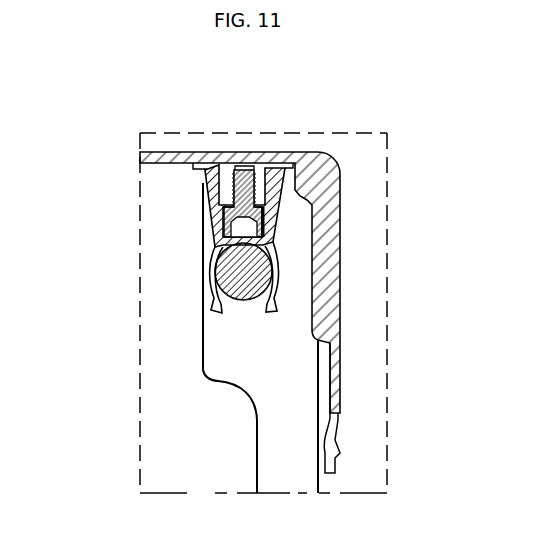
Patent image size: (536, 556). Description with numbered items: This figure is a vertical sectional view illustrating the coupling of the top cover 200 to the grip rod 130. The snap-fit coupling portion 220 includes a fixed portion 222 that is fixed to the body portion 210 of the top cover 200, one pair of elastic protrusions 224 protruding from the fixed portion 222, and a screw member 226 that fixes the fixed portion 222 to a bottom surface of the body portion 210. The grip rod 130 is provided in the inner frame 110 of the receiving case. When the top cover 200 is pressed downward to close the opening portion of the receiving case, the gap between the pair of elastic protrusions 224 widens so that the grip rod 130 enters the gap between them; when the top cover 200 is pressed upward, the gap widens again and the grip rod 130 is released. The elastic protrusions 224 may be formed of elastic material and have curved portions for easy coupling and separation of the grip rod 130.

The top cover 200 is at (271, 131).
The body portion 210 is at (321, 152).
The snap-fit coupling portion 220 is at (188, 239).
The fixed portion 222 is at (205, 176).
The elastic protrusions 224 is at (207, 266).
The screw member 226 is at (218, 225).
The grip rod 130 is at (213, 292).
The inner frame 110 is at (212, 334).